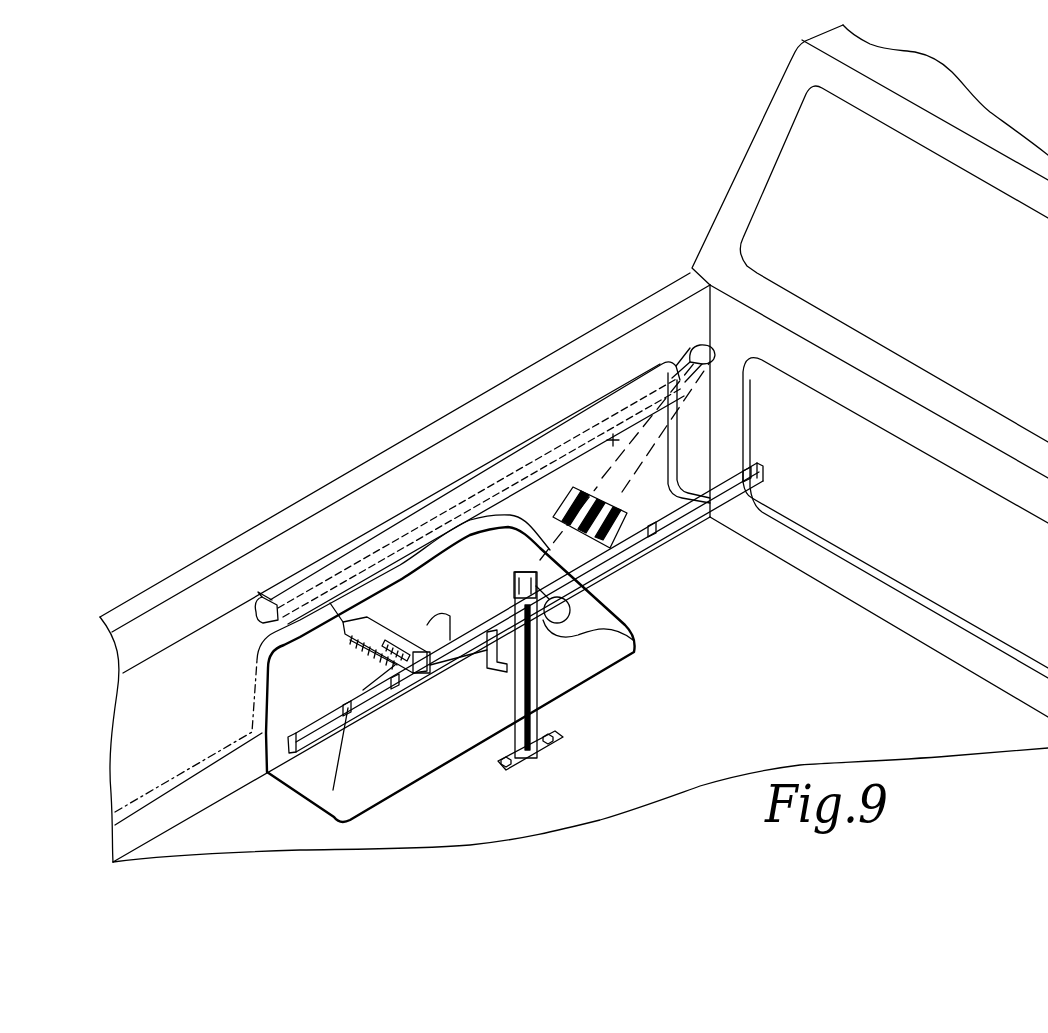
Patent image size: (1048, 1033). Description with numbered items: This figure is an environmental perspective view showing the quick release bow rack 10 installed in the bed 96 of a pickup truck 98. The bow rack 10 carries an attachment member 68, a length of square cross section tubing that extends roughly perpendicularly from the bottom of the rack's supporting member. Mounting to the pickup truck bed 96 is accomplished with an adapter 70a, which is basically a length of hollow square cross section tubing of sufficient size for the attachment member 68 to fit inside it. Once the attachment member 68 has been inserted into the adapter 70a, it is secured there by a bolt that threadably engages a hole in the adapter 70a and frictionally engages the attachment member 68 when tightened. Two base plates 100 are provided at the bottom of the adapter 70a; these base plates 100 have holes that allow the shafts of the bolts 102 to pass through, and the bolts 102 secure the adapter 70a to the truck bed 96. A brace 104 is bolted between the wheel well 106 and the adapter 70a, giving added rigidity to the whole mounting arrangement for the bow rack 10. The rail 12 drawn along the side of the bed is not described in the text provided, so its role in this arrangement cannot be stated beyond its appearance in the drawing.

The bow rack 10 is at (337, 703).
The rail 12 is at (572, 400).
The attachment member 68 is at (585, 615).
The adapter 70a is at (540, 690).
The bed 96 is at (749, 680).
The pickup truck 98 is at (738, 205).
The base plates 100 is at (500, 768).
The bolts 102 is at (500, 761).
The brace 104 is at (487, 670).
The wheel well 106 is at (288, 716).